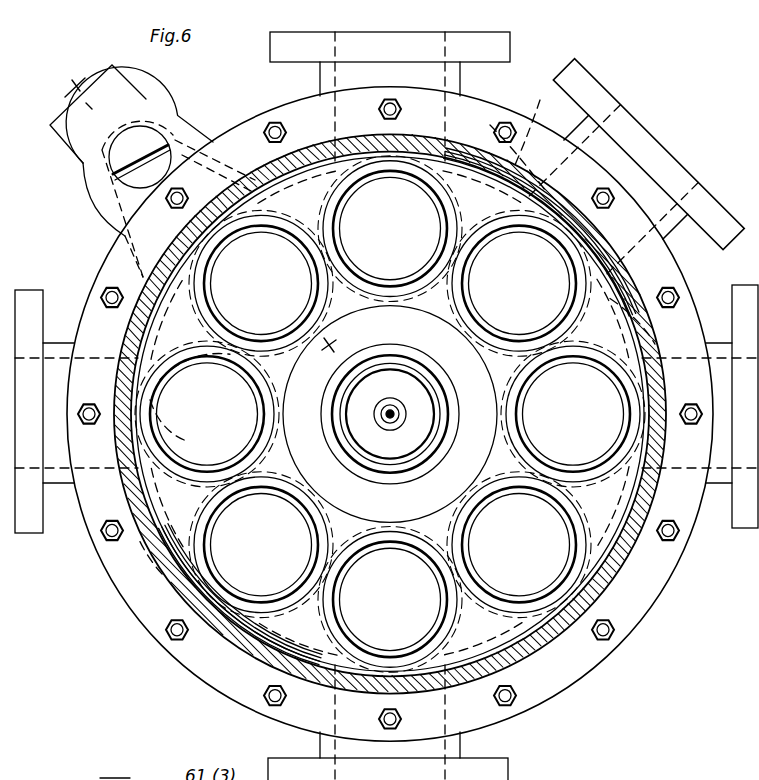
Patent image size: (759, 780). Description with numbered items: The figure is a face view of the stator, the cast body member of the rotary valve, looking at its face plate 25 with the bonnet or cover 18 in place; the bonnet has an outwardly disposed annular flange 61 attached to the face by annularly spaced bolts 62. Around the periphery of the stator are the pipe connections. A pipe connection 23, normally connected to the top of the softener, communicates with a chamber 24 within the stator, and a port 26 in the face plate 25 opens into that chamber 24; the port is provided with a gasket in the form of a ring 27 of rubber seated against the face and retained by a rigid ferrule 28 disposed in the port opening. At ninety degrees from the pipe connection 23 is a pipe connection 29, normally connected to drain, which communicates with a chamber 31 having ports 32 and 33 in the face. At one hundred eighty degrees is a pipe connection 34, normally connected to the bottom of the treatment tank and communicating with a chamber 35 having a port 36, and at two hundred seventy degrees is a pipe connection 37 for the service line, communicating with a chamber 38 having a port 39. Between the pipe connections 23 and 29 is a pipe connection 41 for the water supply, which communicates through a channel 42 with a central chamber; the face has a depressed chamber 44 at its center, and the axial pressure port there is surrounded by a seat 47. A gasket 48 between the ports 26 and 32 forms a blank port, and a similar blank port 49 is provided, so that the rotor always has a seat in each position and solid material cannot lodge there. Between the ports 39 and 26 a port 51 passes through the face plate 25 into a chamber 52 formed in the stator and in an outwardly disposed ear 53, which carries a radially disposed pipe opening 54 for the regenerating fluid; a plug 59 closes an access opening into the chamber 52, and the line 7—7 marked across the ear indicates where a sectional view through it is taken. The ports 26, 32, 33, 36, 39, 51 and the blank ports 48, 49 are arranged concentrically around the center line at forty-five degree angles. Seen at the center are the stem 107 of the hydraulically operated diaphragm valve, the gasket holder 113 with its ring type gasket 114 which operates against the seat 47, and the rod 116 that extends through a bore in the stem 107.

The section line 7 is at (189, 227).
The bonnet or cover 18 is at (650, 337).
The pipe connection 23 is at (510, 50).
The chamber 24 is at (495, 122).
The face plate 25 is at (615, 300).
The port 26 is at (390, 229).
The ring 27 is at (155, 385).
The rigid ferrule 28 is at (200, 360).
The pipe connection 29 is at (745, 528).
The chamber 31 is at (625, 548).
The port 32 is at (573, 414).
The port 33 is at (519, 545).
The pipe connection 34 is at (508, 768).
The chamber 35 is at (272, 660).
The port 36 is at (390, 599).
The pipe connection 37 is at (28, 533).
The chamber 38 is at (138, 545).
The port 39 is at (207, 414).
The pipe connection 41 is at (583, 88).
The channel 42 is at (533, 125).
The depressed chamber 44 is at (418, 305).
The seat 47 is at (443, 384).
The gasket 48 is at (585, 244).
The blank port 49 is at (261, 545).
The port 51 is at (261, 283).
The chamber 52 is at (105, 262).
The ear 53 is at (195, 101).
The pipe opening 54 is at (118, 86).
The plug 59 is at (140, 157).
The annular flange 61 is at (630, 594).
The bolts 62 is at (508, 697).
The stem 107 is at (400, 428).
The gasket holder 113 is at (448, 393).
The ring type gasket 114 is at (420, 422).
The rod 116 is at (388, 420).